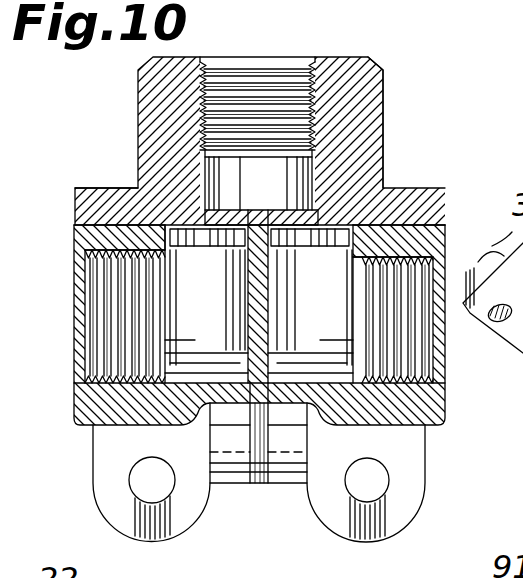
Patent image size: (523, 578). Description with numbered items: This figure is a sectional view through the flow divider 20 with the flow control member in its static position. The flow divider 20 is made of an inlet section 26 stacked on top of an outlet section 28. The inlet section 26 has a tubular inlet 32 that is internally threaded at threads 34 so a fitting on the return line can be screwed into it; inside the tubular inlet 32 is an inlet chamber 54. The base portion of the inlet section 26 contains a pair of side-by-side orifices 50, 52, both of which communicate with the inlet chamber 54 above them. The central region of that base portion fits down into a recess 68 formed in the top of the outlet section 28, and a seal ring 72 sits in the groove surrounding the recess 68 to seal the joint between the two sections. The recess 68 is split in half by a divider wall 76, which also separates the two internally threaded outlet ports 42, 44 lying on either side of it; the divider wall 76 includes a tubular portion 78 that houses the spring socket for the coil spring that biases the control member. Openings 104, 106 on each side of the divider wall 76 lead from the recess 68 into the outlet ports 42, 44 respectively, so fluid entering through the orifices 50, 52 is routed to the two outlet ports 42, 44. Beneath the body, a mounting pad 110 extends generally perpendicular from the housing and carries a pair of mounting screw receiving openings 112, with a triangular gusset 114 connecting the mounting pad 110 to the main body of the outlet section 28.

The flow divider 20 is at (282, 500).
The inlet section 26 is at (130, 107).
The outlet section 28 is at (88, 430).
The tubular inlet 32 is at (367, 77).
The threads 34 is at (277, 85).
The outlet port 42 is at (107, 320).
The outlet port 44 is at (417, 365).
The orifice 50 is at (165, 222).
The orifice 52 is at (297, 215).
The inlet chamber 54 is at (295, 170).
The recess 68 is at (185, 235).
The seal ring 72 is at (78, 192).
The divider wall 76 is at (300, 338).
The tubular portion 78 is at (227, 272).
The opening 104 is at (163, 243).
The opening 106 is at (335, 252).
The mounting pad 110 is at (107, 478).
The mounting screw receiving openings 112 is at (375, 478).
The triangular gusset 114 is at (240, 458).